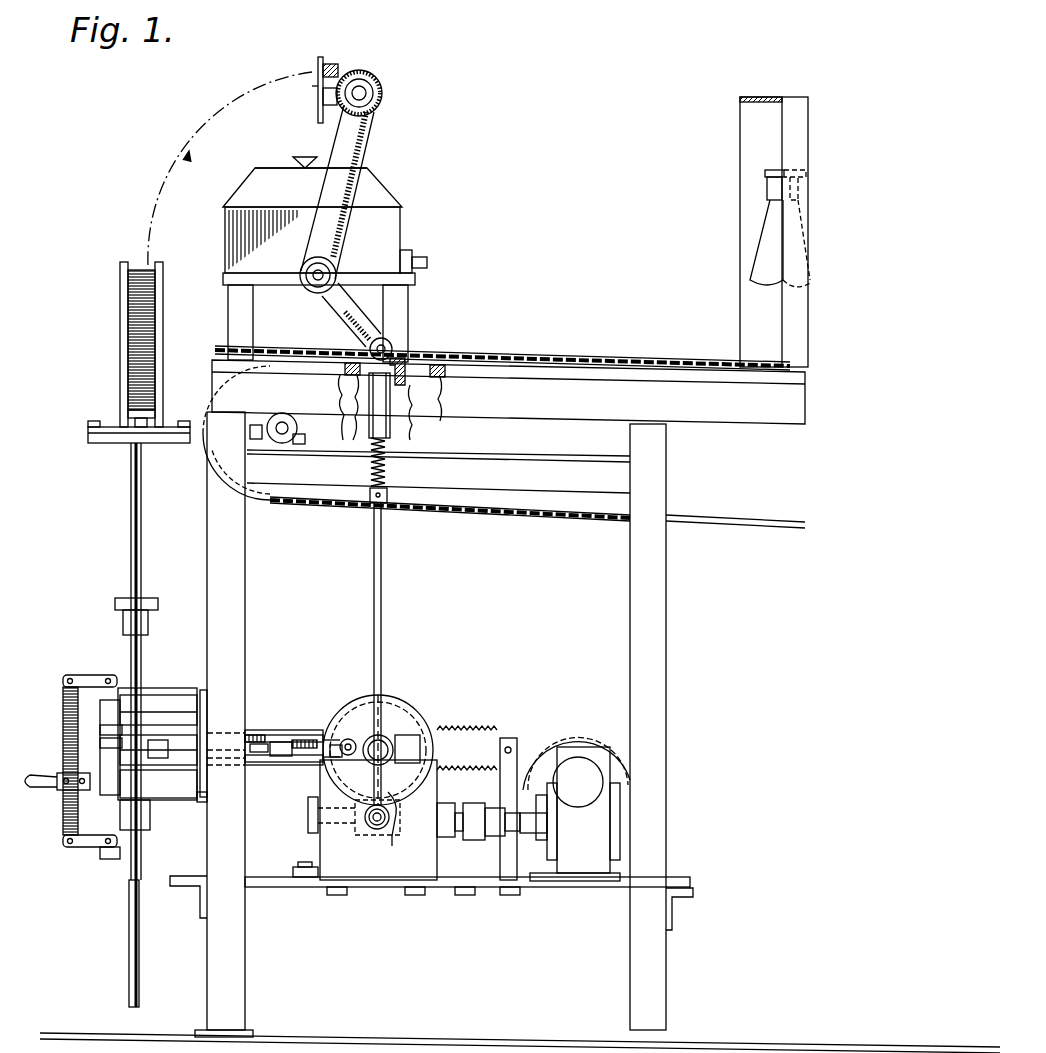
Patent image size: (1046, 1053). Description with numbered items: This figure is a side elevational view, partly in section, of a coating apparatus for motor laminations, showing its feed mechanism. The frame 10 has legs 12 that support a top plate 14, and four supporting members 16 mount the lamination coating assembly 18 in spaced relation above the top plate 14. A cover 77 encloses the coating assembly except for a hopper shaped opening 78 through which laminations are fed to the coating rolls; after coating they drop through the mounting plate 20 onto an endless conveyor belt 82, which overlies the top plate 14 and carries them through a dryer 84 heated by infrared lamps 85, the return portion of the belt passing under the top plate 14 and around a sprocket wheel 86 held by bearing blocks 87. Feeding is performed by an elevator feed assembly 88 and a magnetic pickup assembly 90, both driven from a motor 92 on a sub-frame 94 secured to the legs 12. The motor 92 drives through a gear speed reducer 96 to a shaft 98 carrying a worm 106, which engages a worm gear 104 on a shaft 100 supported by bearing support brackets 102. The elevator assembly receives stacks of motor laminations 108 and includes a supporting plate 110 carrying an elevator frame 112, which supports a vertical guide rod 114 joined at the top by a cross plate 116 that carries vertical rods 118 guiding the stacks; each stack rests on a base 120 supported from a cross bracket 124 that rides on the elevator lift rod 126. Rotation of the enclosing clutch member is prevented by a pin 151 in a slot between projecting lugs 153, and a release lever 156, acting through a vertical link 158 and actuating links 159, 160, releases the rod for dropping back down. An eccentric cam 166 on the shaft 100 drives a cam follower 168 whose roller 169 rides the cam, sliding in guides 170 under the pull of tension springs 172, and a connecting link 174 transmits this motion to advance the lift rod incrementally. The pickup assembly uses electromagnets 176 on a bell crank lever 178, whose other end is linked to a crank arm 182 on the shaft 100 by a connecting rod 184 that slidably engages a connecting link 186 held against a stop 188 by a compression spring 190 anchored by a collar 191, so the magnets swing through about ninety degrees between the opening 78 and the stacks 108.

The frame 10 is at (684, 593).
The legs 12 is at (235, 606).
The top plate 14 is at (525, 362).
The supporting members 16 is at (230, 332).
The lamination coating assembly 18 is at (405, 214).
The mounting plate 20 is at (426, 266).
The cover 77 is at (254, 170).
The hopper shaped opening 78 is at (312, 154).
The conveyor belt 82 is at (308, 346).
The dryer 84 is at (738, 137).
The infrared lamps 85 is at (758, 262).
The sprocket wheel 86 is at (294, 500).
The bearing blocks 87 is at (296, 428).
The elevator feed assembly 88 is at (110, 664).
The magnetic pickup assembly 90 is at (379, 71).
The motor 92 is at (582, 722).
The sub-frame 94 is at (464, 888).
The gear speed reducer 96 is at (566, 888).
The shaft 98 is at (316, 832).
The shaft 100 is at (368, 706).
The bearing support brackets 102 is at (380, 880).
The worm gear 104 is at (390, 684).
The worm 106 is at (360, 826).
The stacks of motor laminations 108 is at (142, 244).
The supporting plate 110 is at (210, 802).
The elevator frame 112 is at (172, 690).
The vertical guide rod 114 is at (130, 530).
The cross plate 116 is at (100, 442).
The vertical rods 118 is at (130, 332).
The base 120 is at (144, 412).
The cross bracket 124 is at (154, 598).
The elevator lift rod 126 is at (128, 936).
The pin 151 is at (114, 742).
The projecting lugs 153 is at (106, 738).
The release lever 156 is at (36, 774).
The vertical link 158 is at (70, 720).
The actuating link 159 is at (78, 676).
The actuating link 160 is at (90, 846).
The eccentric cam 166 is at (402, 710).
The cam follower 168 is at (292, 766).
The roller 169 is at (338, 730).
The guides 170 is at (278, 716).
The tension springs 172 is at (500, 738).
The connecting link 174 is at (254, 754).
The electromagnets 176 is at (316, 66).
The bell crank lever 178 is at (362, 134).
The crank arm 182 is at (398, 826).
The connecting rod 184 is at (382, 560).
The connecting link 186 is at (396, 378).
The stop 188 is at (346, 388).
The compression spring 190 is at (384, 448).
The collar 191 is at (388, 500).